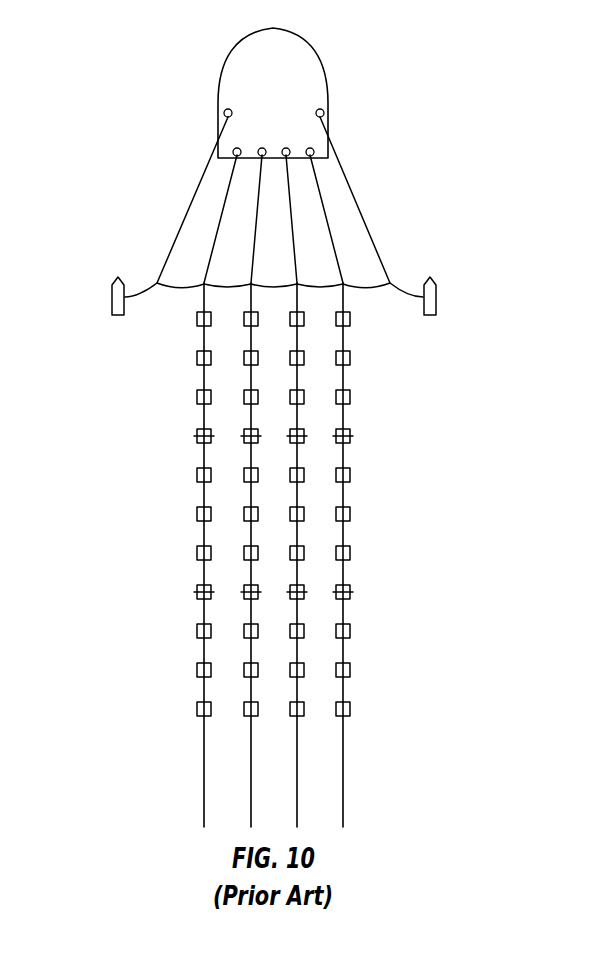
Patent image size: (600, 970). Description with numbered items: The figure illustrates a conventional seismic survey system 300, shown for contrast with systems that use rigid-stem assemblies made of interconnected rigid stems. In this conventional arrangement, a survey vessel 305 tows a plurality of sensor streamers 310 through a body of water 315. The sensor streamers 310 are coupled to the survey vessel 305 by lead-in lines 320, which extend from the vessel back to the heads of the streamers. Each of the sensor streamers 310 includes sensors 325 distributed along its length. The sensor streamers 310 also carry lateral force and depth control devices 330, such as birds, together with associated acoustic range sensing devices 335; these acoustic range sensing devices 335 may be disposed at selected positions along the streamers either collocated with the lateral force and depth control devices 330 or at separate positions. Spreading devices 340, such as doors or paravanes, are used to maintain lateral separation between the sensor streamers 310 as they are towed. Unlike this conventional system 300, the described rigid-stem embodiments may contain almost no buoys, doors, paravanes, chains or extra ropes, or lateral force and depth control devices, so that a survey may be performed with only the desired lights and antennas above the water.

The seismic survey system 300 is at (399, 80).
The survey vessel 305 is at (307, 47).
The sensor streamers 310 is at (243, 288).
The body of water 315 is at (180, 100).
The lead-in lines 320 is at (255, 230).
The sensors 325 is at (248, 326).
The lateral force and depth control devices 330 is at (244, 434).
The acoustic range sensing devices 335 is at (248, 365).
The spreading devices 340 is at (112, 297).